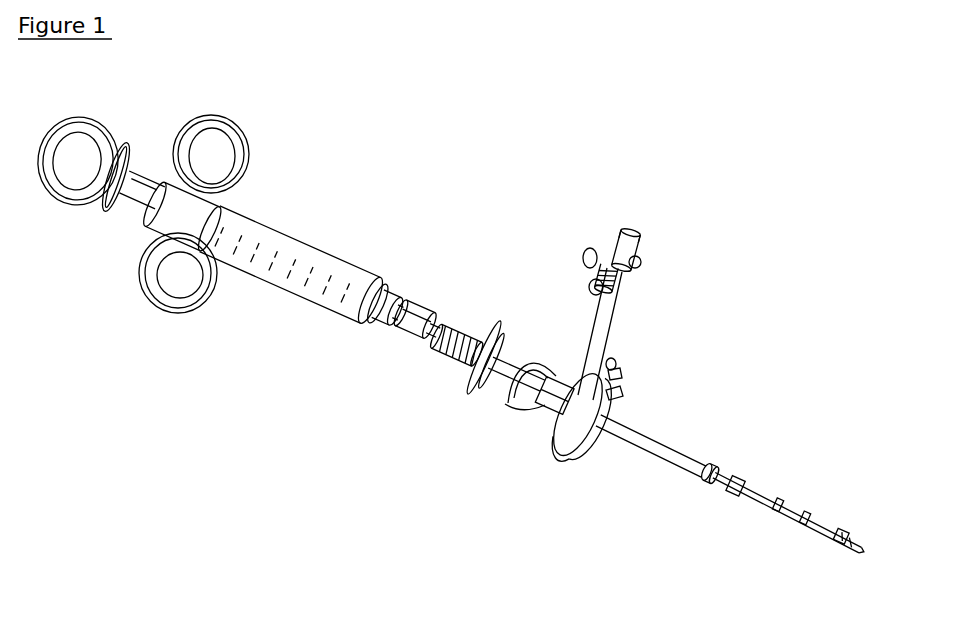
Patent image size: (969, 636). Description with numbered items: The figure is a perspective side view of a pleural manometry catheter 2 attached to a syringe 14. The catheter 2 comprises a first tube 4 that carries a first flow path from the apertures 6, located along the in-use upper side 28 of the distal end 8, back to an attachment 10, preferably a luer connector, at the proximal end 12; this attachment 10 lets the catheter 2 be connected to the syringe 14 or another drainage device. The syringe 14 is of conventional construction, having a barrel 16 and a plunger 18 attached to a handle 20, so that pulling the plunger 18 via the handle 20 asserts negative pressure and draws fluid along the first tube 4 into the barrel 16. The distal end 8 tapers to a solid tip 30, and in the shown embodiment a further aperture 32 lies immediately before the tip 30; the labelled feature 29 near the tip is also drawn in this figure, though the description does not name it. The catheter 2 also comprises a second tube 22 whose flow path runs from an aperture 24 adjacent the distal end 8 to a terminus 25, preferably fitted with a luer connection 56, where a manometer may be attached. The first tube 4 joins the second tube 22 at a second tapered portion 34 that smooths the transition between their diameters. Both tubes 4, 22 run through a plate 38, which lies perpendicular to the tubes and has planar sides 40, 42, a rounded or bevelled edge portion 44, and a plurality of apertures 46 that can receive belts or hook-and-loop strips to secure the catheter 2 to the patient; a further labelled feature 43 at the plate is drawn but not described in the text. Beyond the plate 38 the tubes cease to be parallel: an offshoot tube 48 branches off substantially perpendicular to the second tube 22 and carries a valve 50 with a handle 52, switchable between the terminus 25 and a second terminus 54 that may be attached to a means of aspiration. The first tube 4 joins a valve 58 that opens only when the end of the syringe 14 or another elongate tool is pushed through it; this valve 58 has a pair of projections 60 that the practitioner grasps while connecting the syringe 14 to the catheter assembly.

The pleural manometry catheter 2 is at (311, 116).
The first tube 4 is at (789, 512).
The apertures 6 is at (804, 518).
The distal end 8 is at (851, 541).
The attachment 10 is at (403, 338).
The proximal end 12 is at (415, 318).
The syringe 14 is at (297, 267).
The barrel 16 is at (282, 264).
The plunger 18 is at (97, 200).
The handle 20 is at (94, 110).
The second tube 22 is at (571, 390).
The aperture 24 is at (707, 462).
The terminus 25 is at (637, 245).
The upper side 28 is at (777, 505).
The distal opening 29 is at (842, 536).
The tip 30 is at (862, 550).
The further aperture 32 is at (850, 543).
The second tapered portion 34 is at (735, 486).
The plate 38 is at (558, 450).
The planar side 40 is at (595, 422).
The planar side 42 is at (560, 450).
The port connector 43 is at (610, 367).
The bevelled edge portion 44 is at (614, 373).
The apertures 46 is at (617, 397).
The offshoot tube 48 is at (602, 325).
The valve 50 is at (640, 264).
The handle 52 is at (600, 257).
The second terminus 54 is at (587, 248).
The luer connection 56 is at (622, 236).
The valve 58 is at (512, 387).
The projections 60 is at (467, 387).